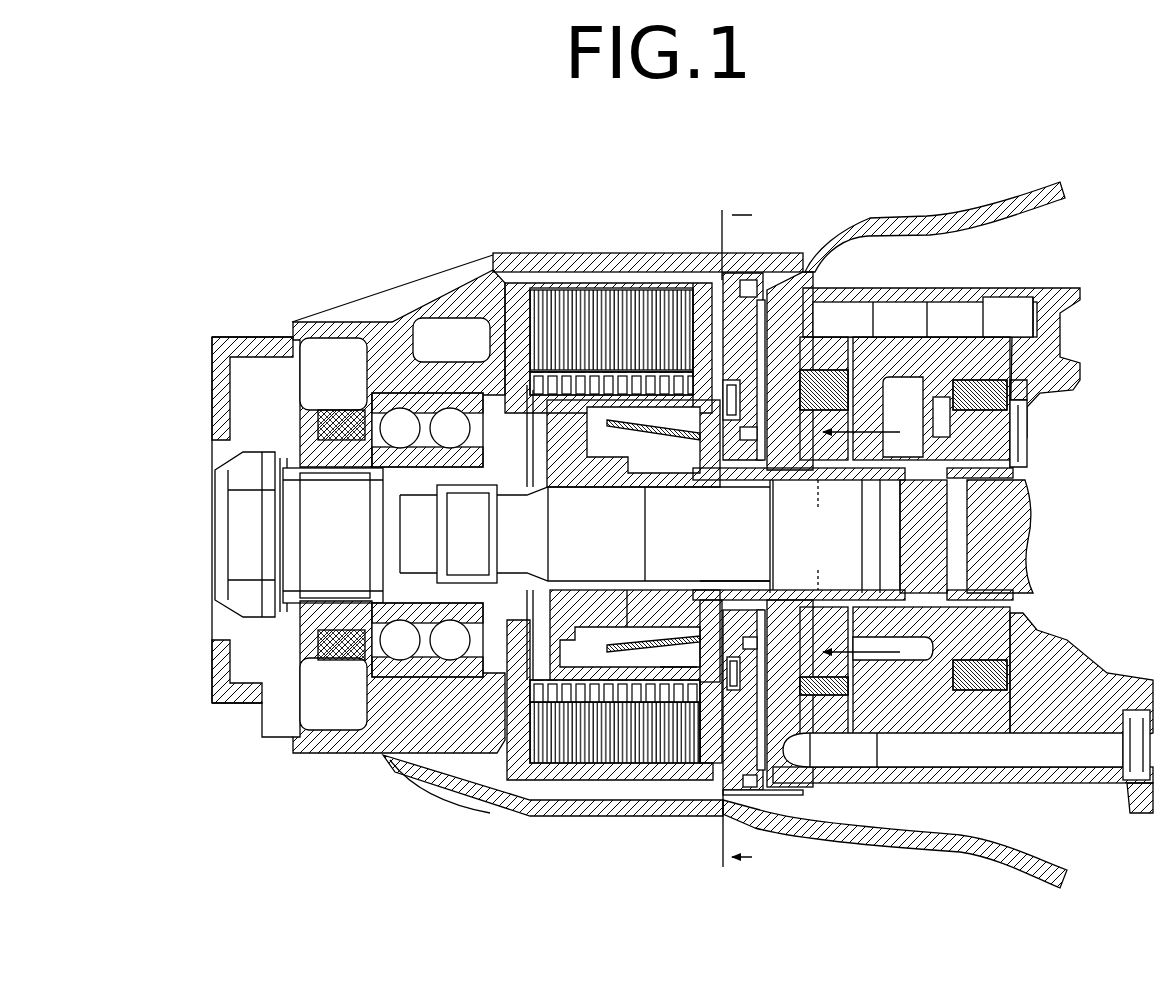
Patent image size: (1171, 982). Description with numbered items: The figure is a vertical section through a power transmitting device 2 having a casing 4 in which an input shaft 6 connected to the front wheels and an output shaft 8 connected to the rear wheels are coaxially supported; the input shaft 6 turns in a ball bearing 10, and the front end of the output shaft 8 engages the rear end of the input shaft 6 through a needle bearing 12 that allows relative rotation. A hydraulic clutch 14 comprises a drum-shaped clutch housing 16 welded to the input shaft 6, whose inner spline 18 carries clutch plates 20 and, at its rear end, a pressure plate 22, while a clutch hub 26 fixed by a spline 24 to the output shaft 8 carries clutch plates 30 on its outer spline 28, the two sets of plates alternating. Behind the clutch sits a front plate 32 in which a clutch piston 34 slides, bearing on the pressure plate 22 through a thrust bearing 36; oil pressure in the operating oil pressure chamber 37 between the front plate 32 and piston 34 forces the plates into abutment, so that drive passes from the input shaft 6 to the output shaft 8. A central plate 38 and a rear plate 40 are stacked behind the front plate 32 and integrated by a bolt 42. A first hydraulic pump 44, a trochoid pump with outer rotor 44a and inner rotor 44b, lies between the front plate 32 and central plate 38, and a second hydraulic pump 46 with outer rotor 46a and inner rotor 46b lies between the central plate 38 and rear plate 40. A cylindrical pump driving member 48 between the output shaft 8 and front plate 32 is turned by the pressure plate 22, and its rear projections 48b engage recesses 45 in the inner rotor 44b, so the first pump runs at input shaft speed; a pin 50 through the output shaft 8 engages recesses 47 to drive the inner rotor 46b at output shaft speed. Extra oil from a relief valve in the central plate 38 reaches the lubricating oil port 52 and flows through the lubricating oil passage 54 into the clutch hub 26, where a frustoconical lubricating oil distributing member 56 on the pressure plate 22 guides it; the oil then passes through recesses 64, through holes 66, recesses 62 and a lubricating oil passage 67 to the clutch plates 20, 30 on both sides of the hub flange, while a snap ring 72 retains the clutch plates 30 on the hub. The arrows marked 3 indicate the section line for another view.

The power transmitting device 2 is at (593, 245).
The section line 3 is at (869, 542).
The casing 4 is at (520, 253).
The input shaft 6 is at (247, 534).
The output shaft 8 is at (1032, 520).
The ball bearing 10 is at (445, 393).
The needle bearing 12 is at (476, 510).
The hydraulic clutch 14 is at (645, 278).
The clutch housing 16 is at (487, 268).
The spline 18 is at (622, 288).
The clutch plates 20 is at (566, 288).
The pressure plate 22 is at (683, 283).
The spline 24 is at (588, 488).
The clutch hub 26 is at (612, 488).
The spline 28 is at (604, 413).
The clutch plates 30 is at (648, 447).
The front plate 32 is at (797, 285).
The clutch piston 34 is at (712, 812).
The thrust bearing 36 is at (730, 380).
The operating oil pressure chamber 37 is at (805, 787).
The central plate 38 is at (925, 288).
The rear plate 40 is at (1057, 288).
The bolt 42 is at (952, 757).
The first hydraulic pump 44 is at (830, 368).
The outer rotor 44a is at (790, 481).
The inner rotor 44b is at (872, 536).
The recesses 45 is at (880, 536).
The second hydraulic pump 46 is at (975, 376).
The outer rotor 46a is at (1030, 398).
The inner rotor 46b is at (1027, 428).
The recesses 47 is at (1013, 475).
The pump driving member 48 is at (757, 490).
The projections 48b is at (833, 535).
The pin 50 is at (965, 540).
The lubricating oil port 52 is at (893, 382).
The lubricating oil passage 54 is at (733, 590).
The lubricating oil distributing member 56 is at (648, 622).
The recess 62 is at (610, 630).
The recess 64 is at (675, 672).
The holes 66 is at (566, 632).
The lubricating oil passage 67 is at (522, 612).
The snap ring 72 is at (505, 733).